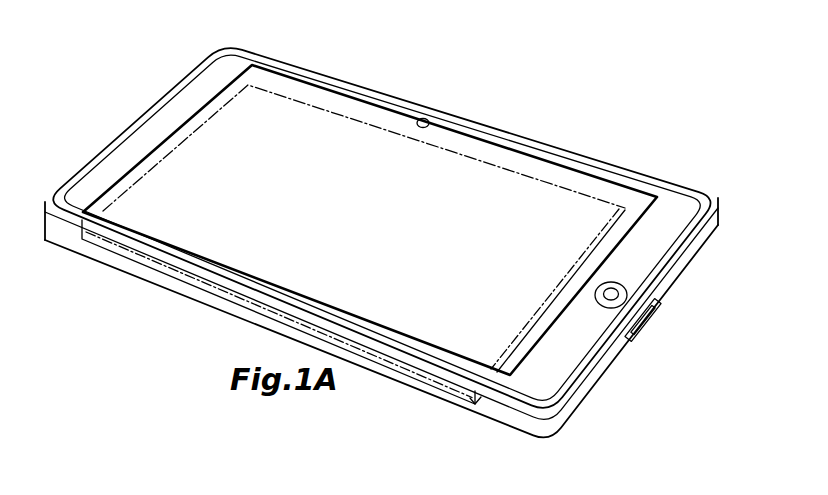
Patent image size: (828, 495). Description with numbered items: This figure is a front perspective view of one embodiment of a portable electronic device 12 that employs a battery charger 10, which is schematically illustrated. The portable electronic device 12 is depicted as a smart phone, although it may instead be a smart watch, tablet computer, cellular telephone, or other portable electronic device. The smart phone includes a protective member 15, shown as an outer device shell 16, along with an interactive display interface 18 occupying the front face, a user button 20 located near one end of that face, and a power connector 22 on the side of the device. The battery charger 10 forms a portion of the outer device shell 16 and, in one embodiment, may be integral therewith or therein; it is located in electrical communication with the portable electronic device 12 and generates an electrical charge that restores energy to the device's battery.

The battery charger 10 is at (137, 266).
The portable electronic device 12 is at (520, 132).
The protective member 15 is at (83, 255).
The outer device shell 16 is at (210, 306).
The interactive display interface 18 is at (420, 118).
The user button 20 is at (627, 289).
The power connector 22 is at (650, 327).